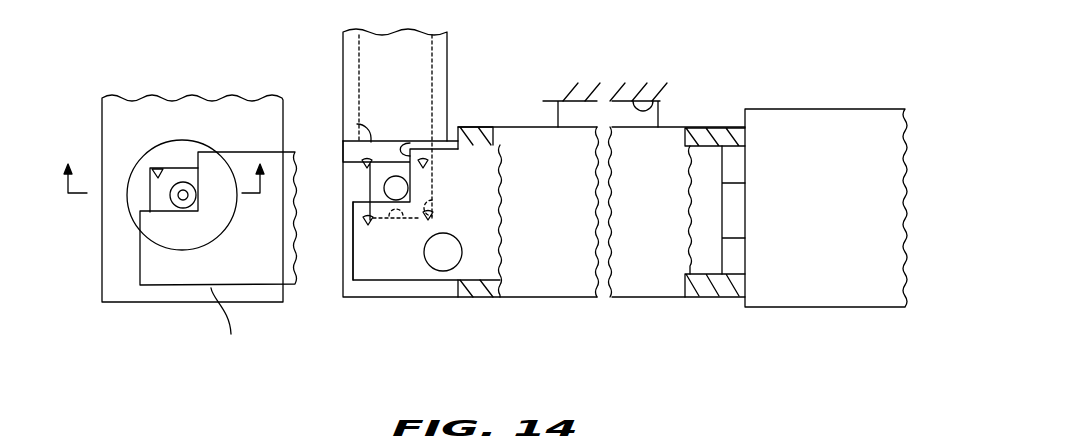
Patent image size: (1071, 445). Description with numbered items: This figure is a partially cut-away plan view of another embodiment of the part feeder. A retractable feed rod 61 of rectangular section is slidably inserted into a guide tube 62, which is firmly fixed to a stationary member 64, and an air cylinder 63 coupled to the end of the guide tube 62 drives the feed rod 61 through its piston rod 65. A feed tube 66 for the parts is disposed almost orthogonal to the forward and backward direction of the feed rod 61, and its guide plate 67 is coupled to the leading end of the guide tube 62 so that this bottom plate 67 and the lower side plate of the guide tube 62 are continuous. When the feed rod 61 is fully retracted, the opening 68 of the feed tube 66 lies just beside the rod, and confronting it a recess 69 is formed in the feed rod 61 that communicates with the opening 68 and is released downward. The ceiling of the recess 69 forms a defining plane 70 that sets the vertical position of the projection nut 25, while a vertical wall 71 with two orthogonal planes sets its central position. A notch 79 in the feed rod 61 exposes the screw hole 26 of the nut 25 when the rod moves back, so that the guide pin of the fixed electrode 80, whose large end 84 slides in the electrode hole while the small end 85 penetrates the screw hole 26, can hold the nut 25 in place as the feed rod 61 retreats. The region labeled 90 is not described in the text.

The projection nut 25 is at (173, 168).
The screw hole 26 is at (385, 188).
The feed rod 61 is at (362, 273).
The guide tube 62 is at (477, 297).
The air cylinder 63 is at (367, 162).
The stationary member 64 is at (660, 102).
The piston rod 65 is at (732, 183).
The feed tube 66 is at (447, 50).
The guide plate 67 is at (398, 290).
The opening 68 is at (343, 145).
The recess 69 is at (383, 152).
The defining plane 70 is at (438, 178).
The vertical wall 71 is at (430, 209).
The notch 79 is at (143, 203).
The fixed electrode 80 is at (209, 243).
The large end 84 is at (184, 182).
The small end 85 is at (187, 208).
The housing 90 is at (109, 303).